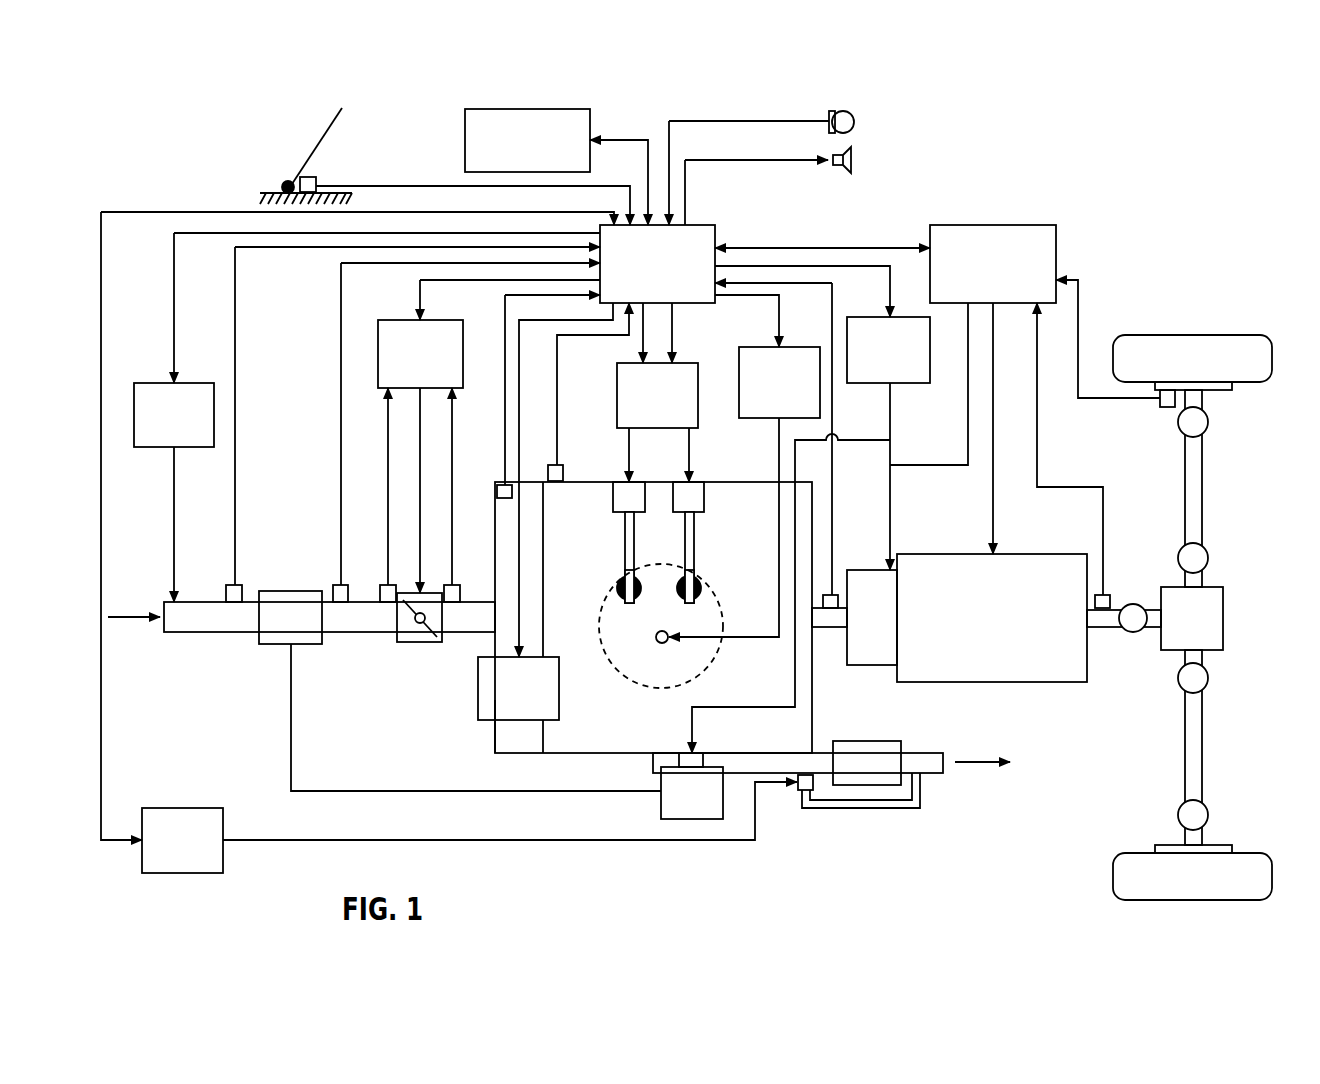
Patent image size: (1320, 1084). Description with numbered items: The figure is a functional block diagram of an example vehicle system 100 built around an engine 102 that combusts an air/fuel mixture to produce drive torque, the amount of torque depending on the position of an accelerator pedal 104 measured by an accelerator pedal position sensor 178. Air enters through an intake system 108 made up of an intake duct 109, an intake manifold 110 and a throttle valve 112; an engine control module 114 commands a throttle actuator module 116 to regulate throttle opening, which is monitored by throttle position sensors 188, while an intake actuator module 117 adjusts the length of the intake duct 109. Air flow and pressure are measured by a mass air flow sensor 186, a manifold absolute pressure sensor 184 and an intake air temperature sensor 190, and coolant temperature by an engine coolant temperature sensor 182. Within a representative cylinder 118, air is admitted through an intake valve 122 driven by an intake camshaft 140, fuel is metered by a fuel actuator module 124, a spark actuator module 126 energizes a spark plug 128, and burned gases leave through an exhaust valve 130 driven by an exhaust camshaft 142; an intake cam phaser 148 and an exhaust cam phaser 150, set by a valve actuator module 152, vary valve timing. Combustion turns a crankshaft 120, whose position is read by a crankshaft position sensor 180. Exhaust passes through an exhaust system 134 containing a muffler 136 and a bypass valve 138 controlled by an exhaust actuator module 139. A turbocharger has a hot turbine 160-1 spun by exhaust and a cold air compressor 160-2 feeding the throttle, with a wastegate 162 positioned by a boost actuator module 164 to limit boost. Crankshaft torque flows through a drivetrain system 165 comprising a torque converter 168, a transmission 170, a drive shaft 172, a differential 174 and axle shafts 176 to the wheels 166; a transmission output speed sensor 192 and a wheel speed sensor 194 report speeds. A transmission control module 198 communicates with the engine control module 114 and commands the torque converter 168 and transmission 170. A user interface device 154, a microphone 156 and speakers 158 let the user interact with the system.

The vehicle system 100 is at (175, 168).
The engine 102 is at (740, 482).
The accelerator pedal 104 is at (302, 166).
The intake system 108 is at (385, 712).
The intake duct 109 is at (195, 633).
The intake manifold 110 is at (495, 737).
The throttle valve 112 is at (417, 643).
The engine control module 114 is at (699, 225).
The throttle actuator module 116 is at (400, 320).
The intake actuator module 117 is at (150, 383).
The cylinder 118 is at (715, 667).
The crankshaft 120 is at (828, 629).
The intake valve 122 is at (617, 588).
The fuel actuator module 124 is at (559, 690).
The spark actuator module 126 is at (760, 347).
The spark plug 128 is at (657, 640).
The exhaust valve 130 is at (701, 588).
The exhaust system 134 is at (930, 840).
The muffler 136 is at (866, 741).
The bypass valve 138 is at (800, 792).
The exhaust actuator module 139 is at (182, 808).
The intake camshaft 140 is at (625, 548).
The exhaust camshaft 142 is at (694, 548).
The intake cam phaser 148 is at (613, 497).
The exhaust cam phaser 150 is at (704, 497).
The valve actuator module 152 is at (617, 395).
The user interface device 154 is at (465, 150).
The microphone 156 is at (854, 121).
The speakers 158 is at (855, 160).
The hot turbine 160-1 is at (661, 800).
The cold air compressor 160-2 is at (275, 645).
The wastegate 162 is at (703, 760).
The boost actuator module 164 is at (910, 383).
The drivetrain system 165 is at (968, 705).
The wheels 166 is at (1232, 385).
The torque converter 168 is at (872, 668).
The transmission 170 is at (1035, 554).
The drive shaft 172 is at (1108, 629).
The differential 174 is at (1223, 610).
The axle shafts 176 is at (1202, 493).
The accelerator pedal position sensor 178 is at (314, 177).
The crankshaft position sensor 180 is at (838, 595).
The engine coolant temperature sensor 182 is at (565, 465).
The manifold absolute pressure sensor 184 is at (502, 485).
The mass air flow sensor 186 is at (340, 585).
The throttle position sensors 188 is at (386, 604).
The intake air temperature sensor 190 is at (230, 585).
The transmission output speed sensor 192 is at (1110, 597).
The wheel speed sensor 194 is at (1168, 408).
The transmission control module 198 is at (993, 225).